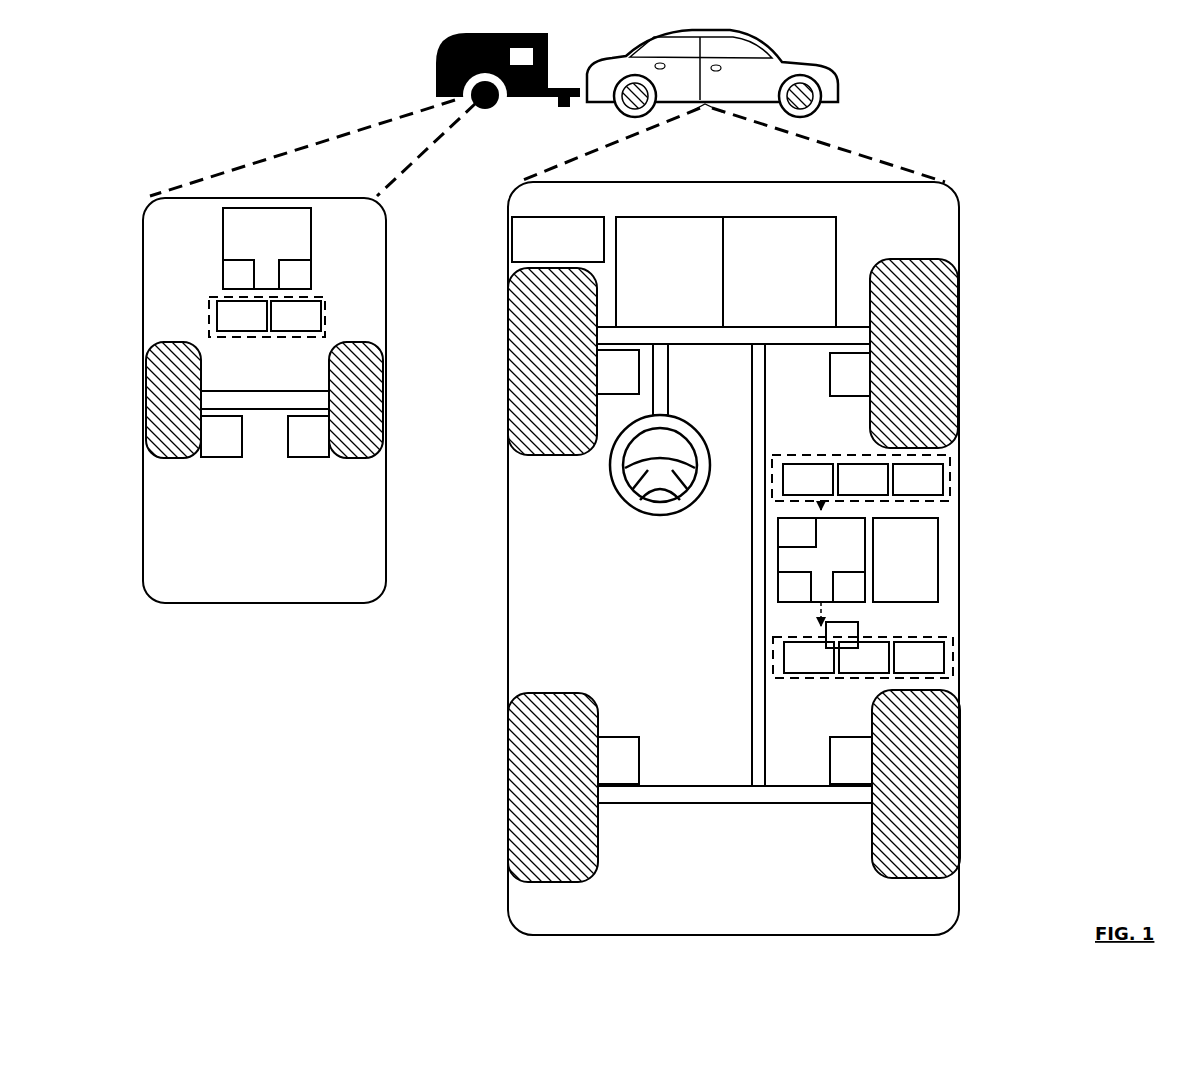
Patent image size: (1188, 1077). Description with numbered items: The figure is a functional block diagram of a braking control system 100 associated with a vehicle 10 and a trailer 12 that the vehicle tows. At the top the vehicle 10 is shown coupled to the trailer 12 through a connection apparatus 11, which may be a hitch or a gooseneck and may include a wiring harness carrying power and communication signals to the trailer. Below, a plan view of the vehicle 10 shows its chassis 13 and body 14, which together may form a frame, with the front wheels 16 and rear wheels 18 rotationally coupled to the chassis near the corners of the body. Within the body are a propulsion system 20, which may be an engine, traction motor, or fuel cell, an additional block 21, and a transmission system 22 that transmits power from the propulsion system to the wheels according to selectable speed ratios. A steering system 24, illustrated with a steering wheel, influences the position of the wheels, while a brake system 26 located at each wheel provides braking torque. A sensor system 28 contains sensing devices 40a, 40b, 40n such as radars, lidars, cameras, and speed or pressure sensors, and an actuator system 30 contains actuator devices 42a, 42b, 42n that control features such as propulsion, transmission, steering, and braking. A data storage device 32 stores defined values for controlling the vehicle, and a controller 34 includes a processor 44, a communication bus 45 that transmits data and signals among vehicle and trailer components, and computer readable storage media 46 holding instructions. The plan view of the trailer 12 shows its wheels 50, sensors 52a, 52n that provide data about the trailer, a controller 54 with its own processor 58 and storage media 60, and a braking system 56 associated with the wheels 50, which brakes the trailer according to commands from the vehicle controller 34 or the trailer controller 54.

The braking control system 100 is at (1114, 137).
The vehicle 10 is at (843, 80).
The connection apparatus 11 is at (569, 76).
The trailer 12 is at (436, 74).
The chassis 13 is at (752, 722).
The body 14 is at (508, 543).
The front wheels 16 is at (557, 455).
The rear wheels 18 is at (570, 882).
The propulsion system 20 is at (669, 272).
The battery 21 is at (558, 239).
The transmission system 22 is at (779, 272).
The steering system 24 is at (692, 373).
The brake system 26 is at (734, 567).
The sensor system 28 is at (792, 452).
The actuator system 30 is at (823, 679).
The data storage device 32 is at (905, 560).
The controller 34 is at (821, 560).
The sensing device 40a is at (808, 479).
The sensing device 40b is at (863, 479).
The sensing device 40n is at (918, 479).
The actuator device 42a is at (809, 657).
The actuator device 42b is at (864, 657).
The actuator device 42n is at (919, 657).
The processor 44 is at (818, 610).
The communication bus 45 is at (797, 532).
The computer readable storage device or media 46 is at (849, 587).
The wheels 50 is at (192, 458).
The sensor 52a is at (242, 316).
The sensor 52n is at (296, 316).
The controller 54 is at (267, 248).
The braking system 56 is at (265, 436).
The processor 58 is at (238, 274).
The computer readable storage device or media 60 is at (295, 274).